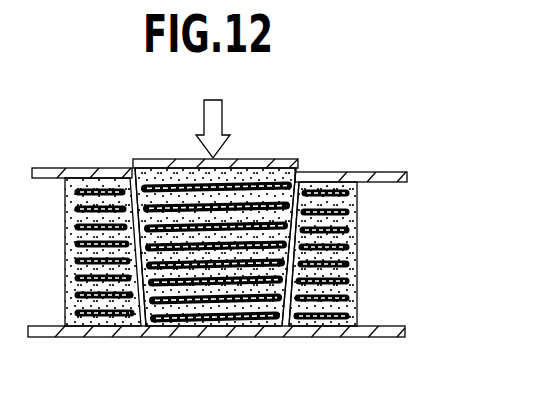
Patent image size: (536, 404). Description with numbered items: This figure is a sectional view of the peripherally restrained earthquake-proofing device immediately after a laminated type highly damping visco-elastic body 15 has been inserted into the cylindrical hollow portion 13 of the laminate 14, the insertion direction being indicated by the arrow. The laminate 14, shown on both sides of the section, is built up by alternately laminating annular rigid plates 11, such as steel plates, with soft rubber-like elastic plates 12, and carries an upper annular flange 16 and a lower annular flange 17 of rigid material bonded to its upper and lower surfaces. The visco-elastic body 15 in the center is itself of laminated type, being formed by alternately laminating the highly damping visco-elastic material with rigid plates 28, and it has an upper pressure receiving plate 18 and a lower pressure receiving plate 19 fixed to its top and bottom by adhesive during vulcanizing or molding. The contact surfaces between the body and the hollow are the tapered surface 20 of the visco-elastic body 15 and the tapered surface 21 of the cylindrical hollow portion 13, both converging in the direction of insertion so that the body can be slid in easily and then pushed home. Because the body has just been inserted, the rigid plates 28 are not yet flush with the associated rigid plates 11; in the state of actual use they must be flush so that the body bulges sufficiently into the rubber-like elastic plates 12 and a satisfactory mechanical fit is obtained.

The annular rigid plates 11 is at (343, 244).
The rubber-like elastic plates 12 is at (77, 246).
The cylindrical hollow portion 13 is at (297, 174).
The laminate 14 is at (346, 171).
The highly damping visco-elastic body 15 is at (246, 160).
The upper annular flange 16 is at (74, 171).
The lower annular flange 17 is at (59, 338).
The upper pressure receiving plate 18 is at (167, 160).
The lower pressure receiving plate 19 is at (215, 328).
The tapered surface of the visco-elastic body 20 is at (284, 326).
The tapered surface of the cylindrical hollow portion 21 is at (142, 318).
The rigid plates of the laminated type visco-elastic body 28 is at (181, 302).